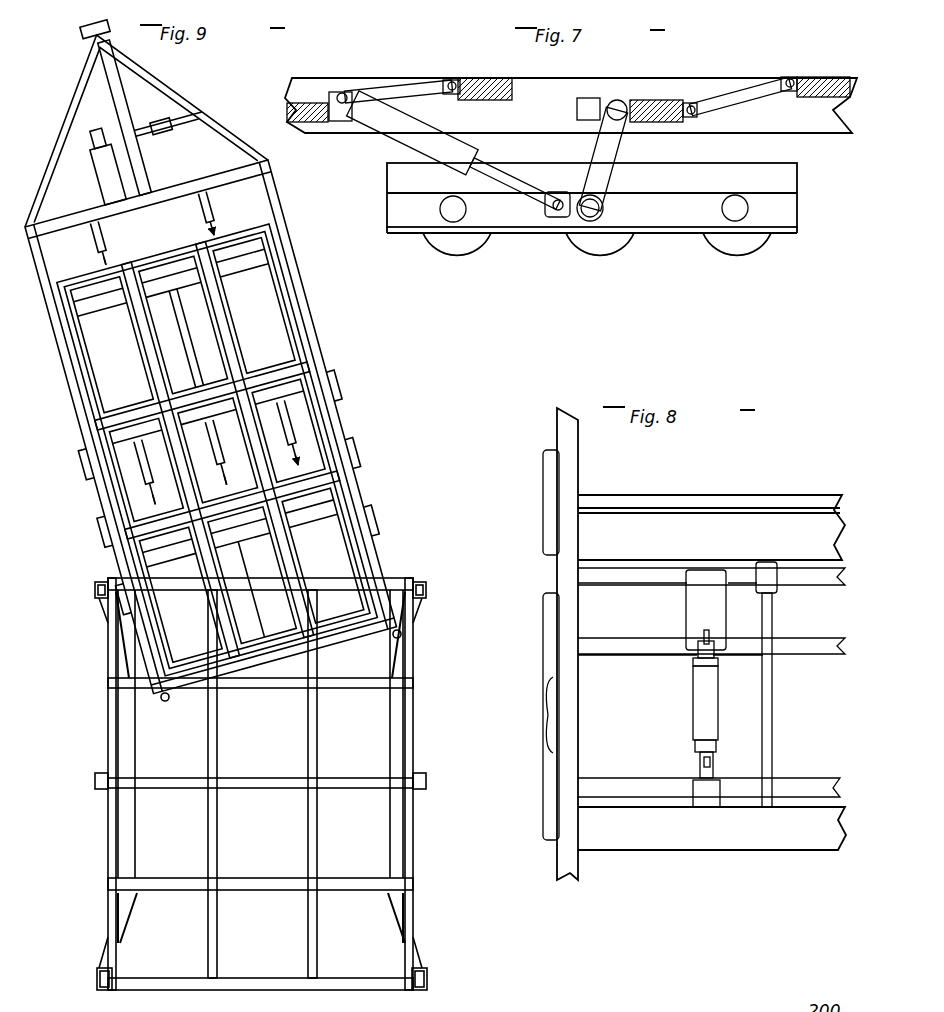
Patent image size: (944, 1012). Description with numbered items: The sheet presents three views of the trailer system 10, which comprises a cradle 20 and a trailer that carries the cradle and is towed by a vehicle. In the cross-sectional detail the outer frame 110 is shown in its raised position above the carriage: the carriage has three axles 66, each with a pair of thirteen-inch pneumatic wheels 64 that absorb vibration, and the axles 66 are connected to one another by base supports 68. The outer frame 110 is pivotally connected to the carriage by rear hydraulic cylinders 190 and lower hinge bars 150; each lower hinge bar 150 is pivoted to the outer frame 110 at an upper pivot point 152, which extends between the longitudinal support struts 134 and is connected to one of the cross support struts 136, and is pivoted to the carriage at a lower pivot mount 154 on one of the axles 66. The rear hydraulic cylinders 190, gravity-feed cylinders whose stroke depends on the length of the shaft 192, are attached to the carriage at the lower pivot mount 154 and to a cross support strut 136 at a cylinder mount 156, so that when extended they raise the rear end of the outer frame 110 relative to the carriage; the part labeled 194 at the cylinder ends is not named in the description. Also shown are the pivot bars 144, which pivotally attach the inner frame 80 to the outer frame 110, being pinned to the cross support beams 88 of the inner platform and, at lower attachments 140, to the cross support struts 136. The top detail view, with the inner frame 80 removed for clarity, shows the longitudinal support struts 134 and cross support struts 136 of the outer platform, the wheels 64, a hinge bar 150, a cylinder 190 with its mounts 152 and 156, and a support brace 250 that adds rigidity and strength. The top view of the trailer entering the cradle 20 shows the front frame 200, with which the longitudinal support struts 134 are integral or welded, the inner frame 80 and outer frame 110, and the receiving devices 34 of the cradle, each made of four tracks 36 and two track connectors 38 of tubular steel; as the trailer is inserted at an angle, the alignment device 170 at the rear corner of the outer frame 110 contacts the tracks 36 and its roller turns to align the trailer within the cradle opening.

In FIG. 9, the trailer system 10 is at (216, 348).
In FIG. 9, the cradle 20 is at (264, 795).
In FIG. 9, the receiving devices 34 is at (136, 737).
In FIG. 9, the tracks 36 is at (103, 612).
In FIG. 9, the track connectors 38 is at (138, 830).
In FIG. 7, the wheels 64 is at (560, 245).
In FIG. 8, the wheels 64 is at (552, 515).
In FIG. 7, the axles 66 is at (722, 210).
In FIG. 7, the base supports 68 is at (390, 218).
In FIG. 9, the inner frame 80 is at (283, 320).
In FIG. 7, the cross support beams 88 is at (480, 78).
In FIG. 9, the outer frame 110 is at (243, 443).
In FIG. 8, the longitudinal support struts 134 is at (557, 438).
In FIG. 7, the cross support struts 136 is at (636, 128).
In FIG. 8, the cross support struts 136 is at (700, 540).
In FIG. 7, the lower attachments 140 is at (703, 116).
In FIG. 7, the pivot bars 144 is at (394, 93).
In FIG. 7, the lower hinge bars 150 is at (585, 140).
In FIG. 8, the lower hinge bars 150 is at (703, 612).
In FIG. 8, the upper pivot point 152 is at (638, 588).
In FIG. 7, the lower pivot mount 154 is at (605, 204).
In FIG. 8, the cylinder mount 156 is at (705, 800).
In FIG. 9, the alignment device 170 is at (399, 642).
In FIG. 7, the rear hydraulic cylinders 190 is at (452, 160).
In FIG. 8, the rear hydraulic cylinders 190 is at (694, 700).
In FIG. 7, the shaft 192 is at (497, 182).
In FIG. 7, the clevis bracket 194 is at (351, 89).
In FIG. 8, the clevis bracket 194 is at (697, 660).
In FIG. 9, the front frame 200 is at (217, 118).
In FIG. 8, the support braces 250 is at (765, 675).